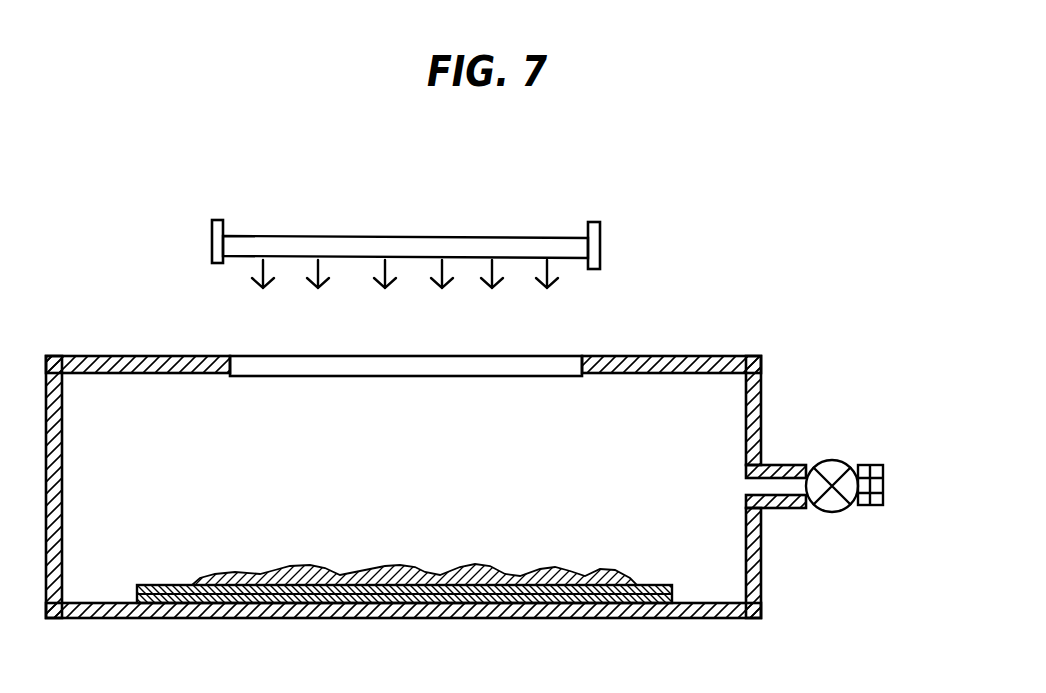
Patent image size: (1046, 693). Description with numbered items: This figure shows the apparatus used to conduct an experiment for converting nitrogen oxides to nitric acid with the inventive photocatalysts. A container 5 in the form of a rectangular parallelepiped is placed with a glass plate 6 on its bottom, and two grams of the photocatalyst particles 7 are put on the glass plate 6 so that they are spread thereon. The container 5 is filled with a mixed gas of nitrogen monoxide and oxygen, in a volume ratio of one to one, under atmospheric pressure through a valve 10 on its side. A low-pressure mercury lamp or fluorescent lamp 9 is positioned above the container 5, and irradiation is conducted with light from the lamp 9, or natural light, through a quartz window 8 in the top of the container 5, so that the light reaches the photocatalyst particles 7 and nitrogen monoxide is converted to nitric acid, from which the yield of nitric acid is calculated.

The container 5 is at (687, 358).
The glass plate 6 is at (226, 600).
The photocatalyst particles 7 is at (556, 580).
The quartz window 8 is at (285, 365).
The low-pressure mercury lamp or fluorescent lamp 9 is at (498, 247).
The valve 10 is at (848, 458).